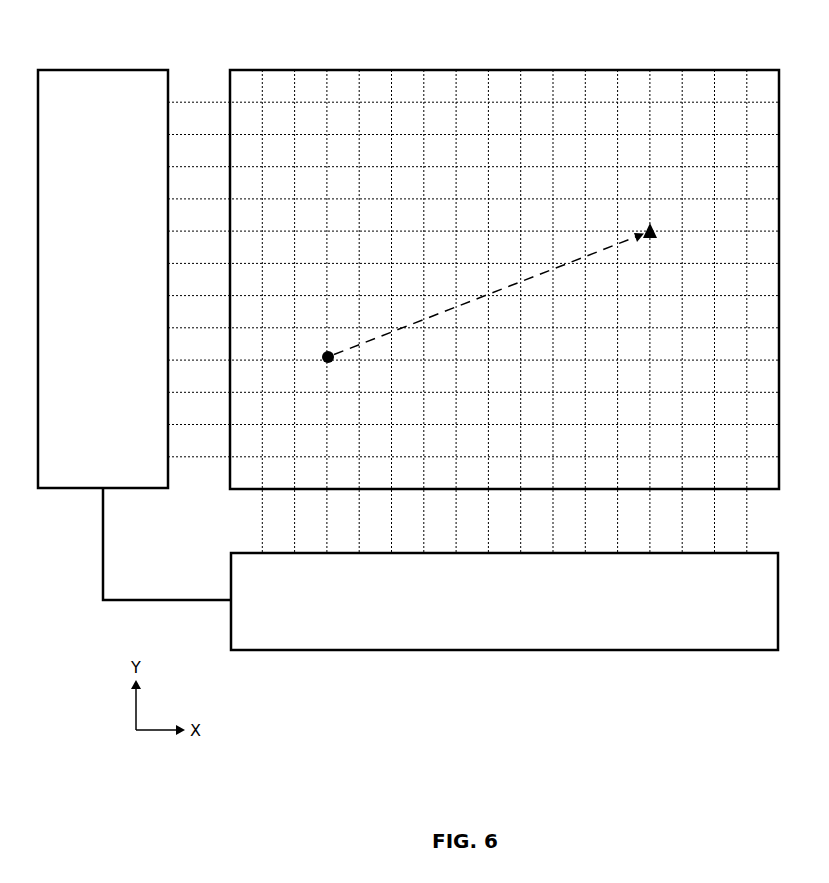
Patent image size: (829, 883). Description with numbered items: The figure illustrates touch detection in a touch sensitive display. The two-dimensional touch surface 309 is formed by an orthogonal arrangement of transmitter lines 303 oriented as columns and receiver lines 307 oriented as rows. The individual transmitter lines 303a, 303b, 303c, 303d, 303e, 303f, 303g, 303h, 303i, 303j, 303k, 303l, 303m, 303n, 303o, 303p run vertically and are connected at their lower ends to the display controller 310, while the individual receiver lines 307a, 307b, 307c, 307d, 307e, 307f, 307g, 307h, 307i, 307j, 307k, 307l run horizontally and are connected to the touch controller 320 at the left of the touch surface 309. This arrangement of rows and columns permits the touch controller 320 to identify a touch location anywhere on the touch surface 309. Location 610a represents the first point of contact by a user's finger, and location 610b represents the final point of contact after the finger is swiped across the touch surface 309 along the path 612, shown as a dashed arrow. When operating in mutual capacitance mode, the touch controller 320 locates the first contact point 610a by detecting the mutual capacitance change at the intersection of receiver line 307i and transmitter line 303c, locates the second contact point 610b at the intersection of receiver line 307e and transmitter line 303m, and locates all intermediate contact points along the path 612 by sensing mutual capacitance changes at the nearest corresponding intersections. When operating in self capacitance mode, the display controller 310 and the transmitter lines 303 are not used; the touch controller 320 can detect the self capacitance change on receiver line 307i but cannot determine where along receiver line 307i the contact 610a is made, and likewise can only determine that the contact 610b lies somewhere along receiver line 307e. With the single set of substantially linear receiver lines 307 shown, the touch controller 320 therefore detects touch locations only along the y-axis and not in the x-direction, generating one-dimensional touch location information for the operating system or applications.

The transmitter lines 303 is at (226, 523).
The transmitter line 303a is at (253, 311).
The transmitter line 303b is at (285, 311).
The transmitter line 303c is at (318, 311).
The transmitter line 303d is at (350, 311).
The transmitter line 303e is at (382, 311).
The transmitter line 303f is at (415, 311).
The transmitter line 303g is at (447, 311).
The transmitter line 303h is at (479, 311).
The transmitter line 303i is at (512, 311).
The transmitter line 303j is at (544, 311).
The transmitter line 303k is at (576, 311).
The transmitter line 303l is at (609, 311).
The transmitter line 303m is at (641, 311).
The transmitter line 303n is at (673, 311).
The transmitter line 303o is at (705, 311).
The transmitter line 303p is at (738, 311).
The receiver lines 307 is at (199, 52).
The receiver line 307a is at (473, 92).
The receiver line 307b is at (473, 125).
The receiver line 307c is at (473, 157).
The receiver line 307d is at (473, 189).
The receiver line 307e is at (473, 221).
The receiver line 307f is at (473, 254).
The receiver line 307g is at (473, 286).
The receiver line 307h is at (473, 318).
The receiver line 307i is at (473, 350).
The receiver line 307j is at (473, 383).
The receiver line 307k is at (473, 415).
The receiver line 307l is at (473, 447).
The touch surface 309 is at (505, 70).
The display controller 310 is at (492, 630).
The touch controller 320 is at (91, 320).
The first contact point 610a is at (333, 362).
The second contact point 610b is at (655, 238).
The path 612 is at (562, 263).